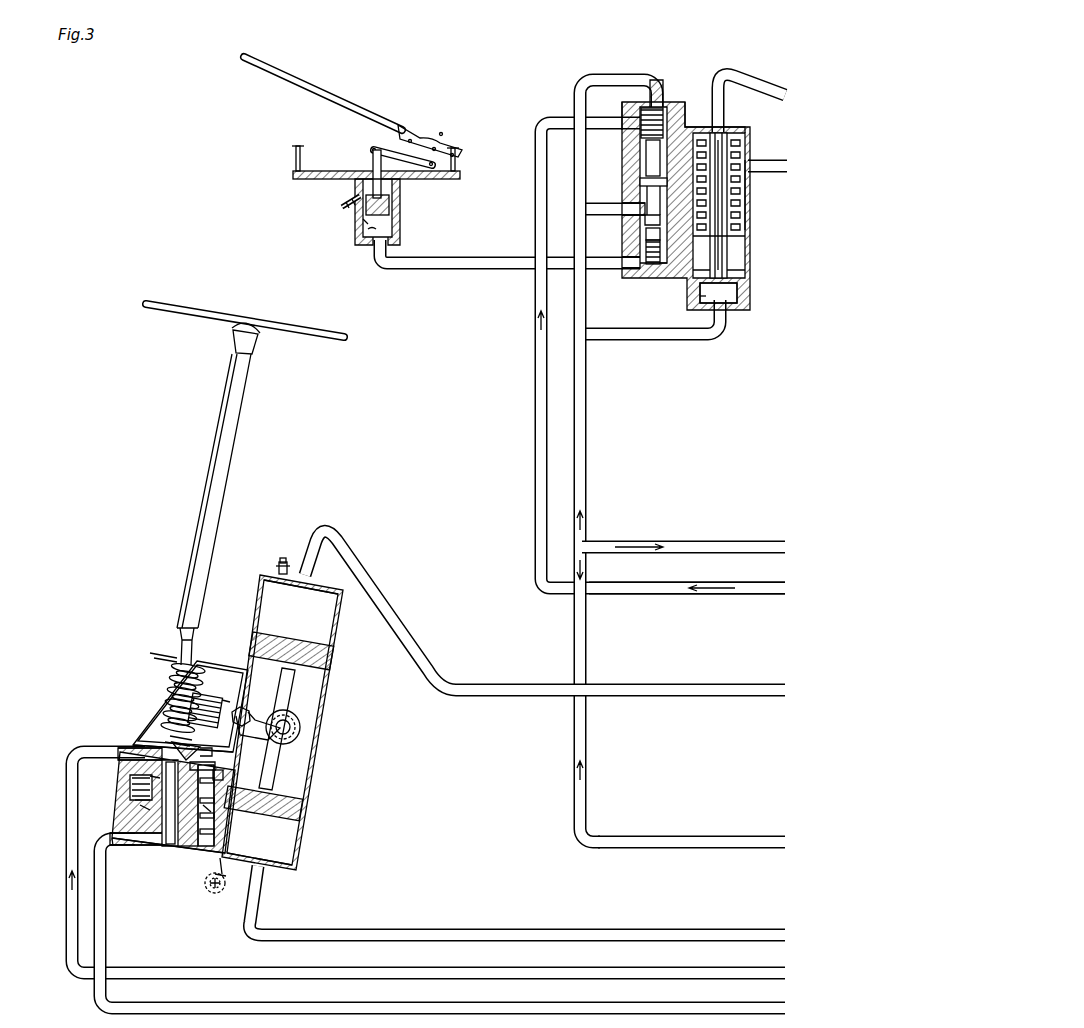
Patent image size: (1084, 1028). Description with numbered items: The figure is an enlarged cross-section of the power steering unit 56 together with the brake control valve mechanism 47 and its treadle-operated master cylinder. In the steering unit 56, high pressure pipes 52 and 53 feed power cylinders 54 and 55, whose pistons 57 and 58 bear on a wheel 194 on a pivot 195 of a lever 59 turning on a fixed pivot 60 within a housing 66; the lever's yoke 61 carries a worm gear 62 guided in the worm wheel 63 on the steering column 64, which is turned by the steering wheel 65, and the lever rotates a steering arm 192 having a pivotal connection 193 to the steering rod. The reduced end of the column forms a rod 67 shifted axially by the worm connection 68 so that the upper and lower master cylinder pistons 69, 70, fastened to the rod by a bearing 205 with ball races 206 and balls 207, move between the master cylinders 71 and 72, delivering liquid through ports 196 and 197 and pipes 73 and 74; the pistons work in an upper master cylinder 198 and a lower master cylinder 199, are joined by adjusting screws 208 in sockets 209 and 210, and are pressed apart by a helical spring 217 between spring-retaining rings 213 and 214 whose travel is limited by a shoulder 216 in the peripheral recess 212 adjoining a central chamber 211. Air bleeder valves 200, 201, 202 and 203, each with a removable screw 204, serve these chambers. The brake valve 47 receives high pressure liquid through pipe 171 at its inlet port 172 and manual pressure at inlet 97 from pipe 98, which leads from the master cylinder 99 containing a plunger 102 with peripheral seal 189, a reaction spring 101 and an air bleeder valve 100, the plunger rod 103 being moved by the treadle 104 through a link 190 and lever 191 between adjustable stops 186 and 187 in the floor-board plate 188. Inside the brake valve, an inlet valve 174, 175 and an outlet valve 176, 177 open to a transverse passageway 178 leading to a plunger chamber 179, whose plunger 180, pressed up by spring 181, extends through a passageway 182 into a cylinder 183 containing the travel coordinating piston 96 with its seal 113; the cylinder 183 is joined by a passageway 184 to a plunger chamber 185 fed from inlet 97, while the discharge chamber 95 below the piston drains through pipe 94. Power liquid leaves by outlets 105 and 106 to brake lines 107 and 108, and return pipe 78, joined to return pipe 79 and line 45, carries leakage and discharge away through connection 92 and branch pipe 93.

The conduit 45 is at (765, 592).
The brake valve mechanism 47 is at (686, 86).
The pipe 52 is at (740, 688).
The pipe 53 is at (736, 934).
The power cylinder 54 is at (312, 611).
The power cylinder 55 is at (280, 853).
The steering unit 56 is at (340, 666).
The piston 57 is at (294, 650).
The piston 58 is at (298, 808).
The lever 59 is at (276, 712).
The fixed pivot 60 is at (242, 706).
The yoke 61 is at (222, 696).
The worm gear 62 is at (206, 692).
The worm wheel 63 is at (165, 698).
The steering column 64 is at (180, 630).
The steering wheel 65 is at (178, 306).
The housing 66 is at (163, 684).
The master cylinder operating rod 67 is at (166, 846).
The worm connection 68 is at (190, 738).
The upper master cylinder piston 69 is at (130, 786).
The lower master cylinder piston 70 is at (135, 848).
The master cylinder 71 is at (150, 776).
The master cylinder 72 is at (142, 850).
The pipe 73 is at (62, 902).
The pipe 74 is at (96, 1000).
The pipe 78 is at (735, 836).
The return pipe 79 is at (745, 545).
The connection 92 is at (618, 78).
The branch pipe 93 is at (620, 209).
The branch pipe 94 is at (645, 334).
The travel coordination cylinder 95 is at (702, 296).
The travel coordinating plunger 96 is at (740, 292).
The manual pressure inlet 97 is at (628, 270).
The pipe 98 is at (443, 262).
The master cylinder 99 is at (368, 250).
The air bleeder valve 100 is at (342, 207).
The reaction spring 101 is at (366, 232).
The plunger 102 is at (392, 214).
The plunger rod 103 is at (373, 158).
The treadle 104 is at (268, 62).
The outlet 105 is at (728, 132).
The outlet 106 is at (762, 166).
The brake line 107 is at (772, 78).
The brake line 108 is at (778, 172).
The seal 113 is at (746, 272).
The pipe 171 is at (540, 372).
The high pressure inlet port 172 is at (635, 105).
The inlet valve 174 is at (640, 130).
The inlet valve 175 is at (644, 156).
The outlet valve 176 is at (642, 180).
The outlet valve 177 is at (640, 208).
The transverse passageway 178 is at (685, 130).
The plunger chamber 179 is at (746, 150).
The plunger 180 is at (728, 192).
The spring 181 is at (745, 210).
The passageway 182 is at (750, 236).
The cylinder 183 is at (688, 258).
The passageway 184 is at (670, 276).
The plunger chamber 185 is at (642, 278).
The adjustable stop 186 is at (296, 155).
The adjustable stop 187 is at (462, 160).
The floor-board plate 188 is at (445, 180).
The peripheral seal 189 is at (364, 219).
The link 190 is at (438, 147).
The lever 191 is at (393, 130).
The steering arm 192 is at (205, 884).
The pivotal connection 193 is at (215, 893).
The wheel 194 is at (300, 738).
The pivot 195 is at (292, 718).
The port 196 is at (140, 748).
The port 197 is at (126, 846).
The upper master cylinder 198 is at (218, 771).
The lower master cylinder 199 is at (192, 848).
The air bleeder valve 200 is at (226, 765).
The air bleeder valve 201 is at (212, 848).
The air bleeder valve 202 is at (276, 560).
The air bleeder valve 203 is at (220, 890).
The removable screw 204 is at (284, 560).
The bearing 205 is at (178, 856).
The ball race 206 is at (118, 839).
The balls 207 is at (165, 742).
The adjusting screw 208 is at (170, 738).
The socket 209 is at (125, 768).
The socket 210 is at (208, 751).
The central chamber 211 is at (210, 785).
The peripheral recess 212 is at (216, 808).
The spring-retaining ring 213 is at (140, 810).
The spring-retaining ring 214 is at (210, 821).
The shoulder 216 is at (210, 836).
The helical spring 217 is at (135, 800).